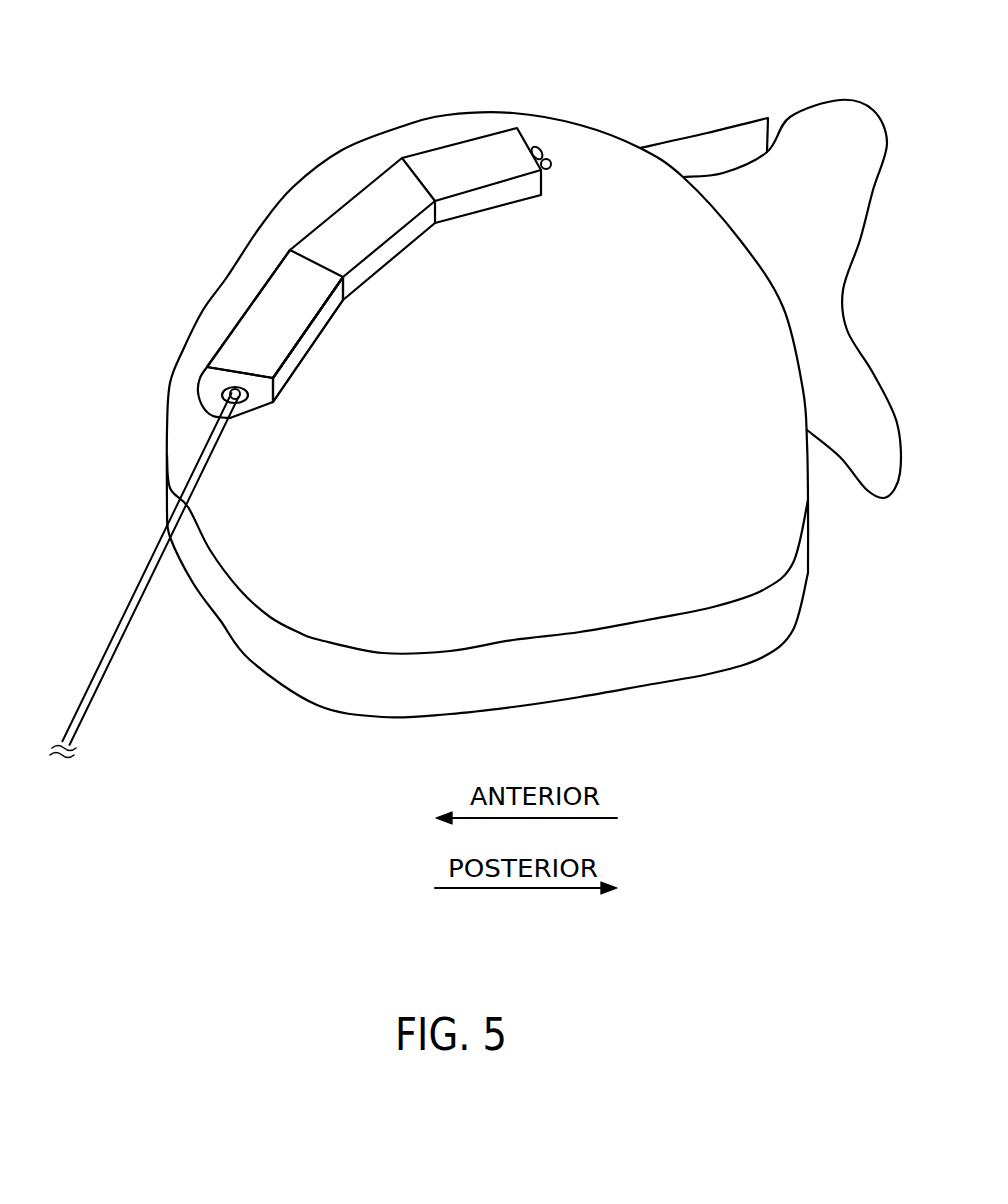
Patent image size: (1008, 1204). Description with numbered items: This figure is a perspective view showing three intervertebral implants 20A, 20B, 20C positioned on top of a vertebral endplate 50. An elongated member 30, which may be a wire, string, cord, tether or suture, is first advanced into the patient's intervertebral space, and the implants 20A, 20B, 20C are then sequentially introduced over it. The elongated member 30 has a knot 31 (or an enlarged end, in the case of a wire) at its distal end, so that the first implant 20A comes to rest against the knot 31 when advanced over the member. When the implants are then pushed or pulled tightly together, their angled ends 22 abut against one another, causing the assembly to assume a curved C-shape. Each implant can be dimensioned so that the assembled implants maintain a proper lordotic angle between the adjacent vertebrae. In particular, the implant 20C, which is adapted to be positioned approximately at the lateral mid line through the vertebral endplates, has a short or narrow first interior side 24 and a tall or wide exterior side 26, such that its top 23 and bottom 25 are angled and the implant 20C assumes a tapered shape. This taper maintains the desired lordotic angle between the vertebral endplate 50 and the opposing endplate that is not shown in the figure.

The intervertebral implant 20A is at (455, 165).
The intervertebral implant 20B is at (350, 220).
The intervertebral implant 20C is at (257, 340).
The angled end 22 is at (255, 392).
The top 23 is at (273, 307).
The first interior side 24 is at (297, 358).
The bottom 25 is at (247, 423).
The exterior side 26 is at (200, 372).
The elongated member 30 is at (127, 618).
The knot 31 is at (545, 163).
The vertebral endplate 50 is at (422, 623).